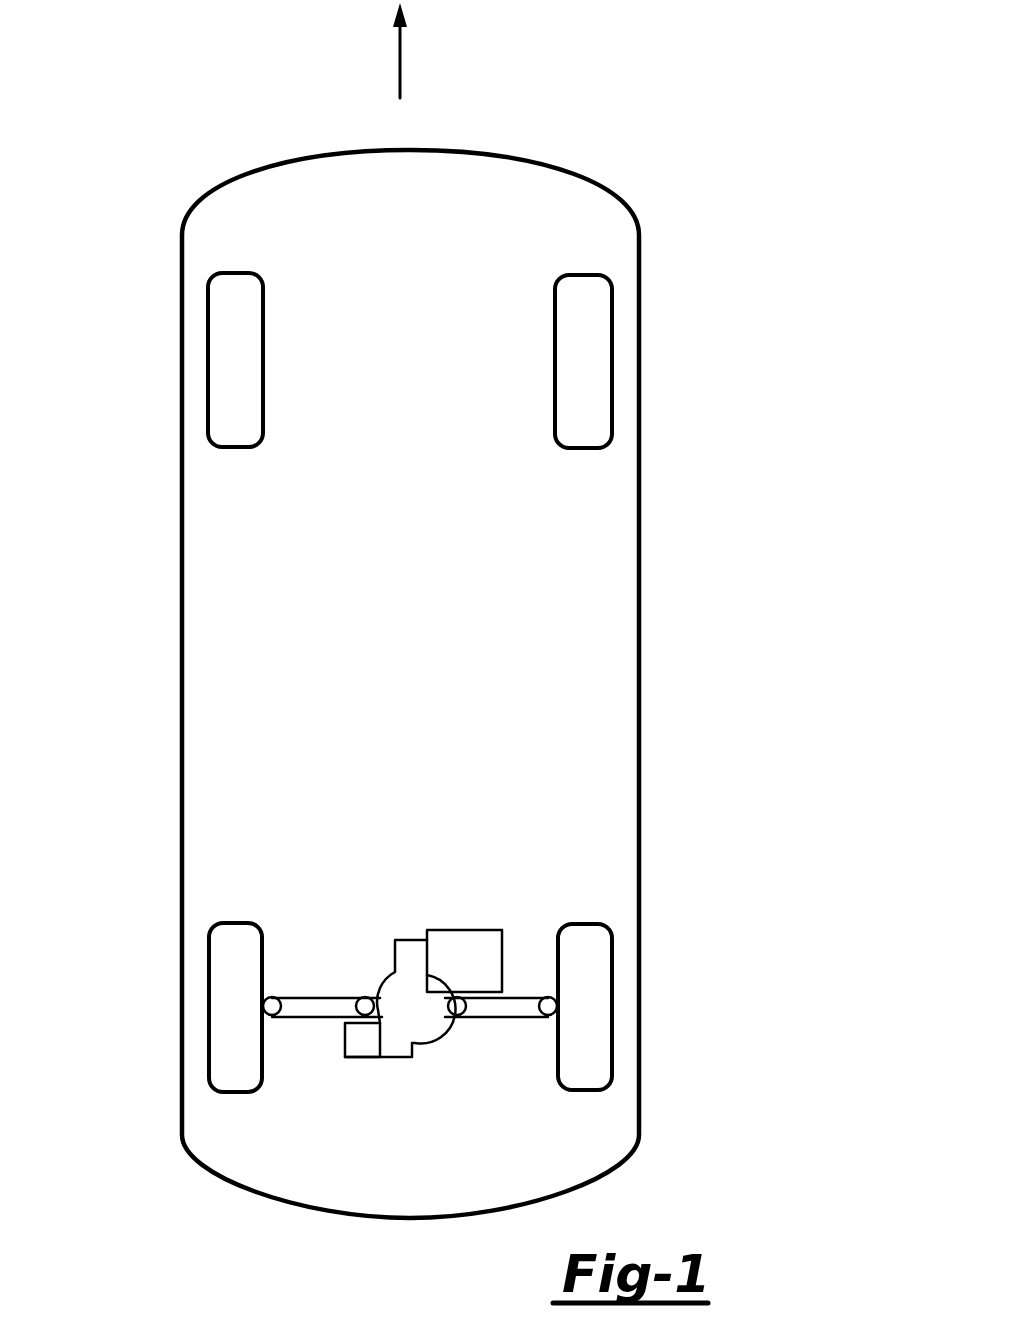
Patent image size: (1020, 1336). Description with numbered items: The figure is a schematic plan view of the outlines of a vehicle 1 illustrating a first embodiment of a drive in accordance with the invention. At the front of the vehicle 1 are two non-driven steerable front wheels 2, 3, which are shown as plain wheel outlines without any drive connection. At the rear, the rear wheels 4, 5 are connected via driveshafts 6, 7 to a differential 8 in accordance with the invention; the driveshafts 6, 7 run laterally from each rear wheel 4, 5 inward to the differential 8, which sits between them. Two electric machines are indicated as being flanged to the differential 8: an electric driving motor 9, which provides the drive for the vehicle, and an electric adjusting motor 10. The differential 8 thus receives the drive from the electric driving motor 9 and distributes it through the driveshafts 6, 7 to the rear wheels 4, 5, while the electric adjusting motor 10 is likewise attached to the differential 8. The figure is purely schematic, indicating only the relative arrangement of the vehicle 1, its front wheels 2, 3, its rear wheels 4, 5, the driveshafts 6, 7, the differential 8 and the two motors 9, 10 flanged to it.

The vehicle 1 is at (639, 568).
The front wheel 2 is at (237, 328).
The front wheel 3 is at (585, 330).
The rear wheel 4 is at (233, 1002).
The rear wheel 5 is at (578, 997).
The driveshaft 6 is at (320, 1008).
The driveshaft 7 is at (513, 1007).
The differential 8 is at (412, 1007).
The electric driving motor 9 is at (473, 965).
The electric adjusting motor 10 is at (362, 1038).